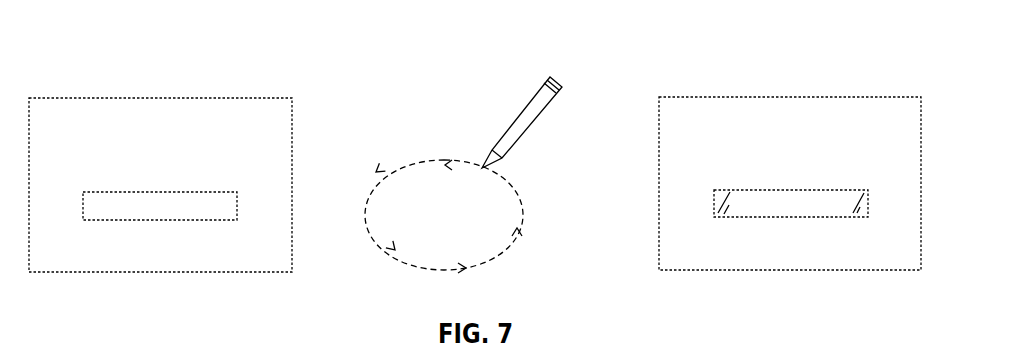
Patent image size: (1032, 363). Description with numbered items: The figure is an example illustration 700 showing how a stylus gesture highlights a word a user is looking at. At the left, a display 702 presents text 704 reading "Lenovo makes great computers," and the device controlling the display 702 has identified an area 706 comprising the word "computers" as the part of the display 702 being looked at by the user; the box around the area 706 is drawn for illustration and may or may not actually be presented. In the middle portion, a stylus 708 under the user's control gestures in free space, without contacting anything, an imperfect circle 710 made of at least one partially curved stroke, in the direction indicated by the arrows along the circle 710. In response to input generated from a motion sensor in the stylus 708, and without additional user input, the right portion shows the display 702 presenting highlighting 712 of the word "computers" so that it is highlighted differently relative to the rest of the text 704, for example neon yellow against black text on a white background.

The example illustration 700 is at (390, 75).
The display 702 is at (247, 98).
The text 704 is at (93, 160).
The area 706 is at (200, 221).
The stylus 708 is at (510, 142).
The imperfect circle 710 is at (493, 258).
The highlighting 712 is at (830, 218).